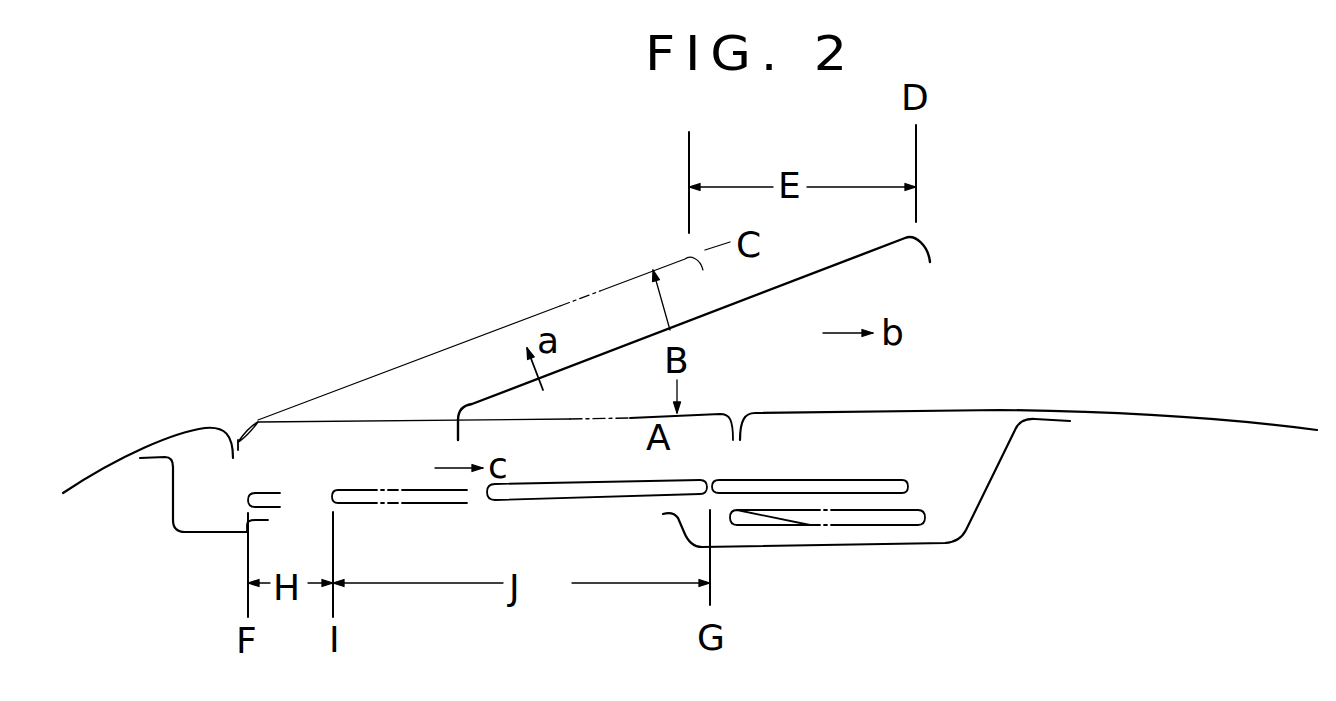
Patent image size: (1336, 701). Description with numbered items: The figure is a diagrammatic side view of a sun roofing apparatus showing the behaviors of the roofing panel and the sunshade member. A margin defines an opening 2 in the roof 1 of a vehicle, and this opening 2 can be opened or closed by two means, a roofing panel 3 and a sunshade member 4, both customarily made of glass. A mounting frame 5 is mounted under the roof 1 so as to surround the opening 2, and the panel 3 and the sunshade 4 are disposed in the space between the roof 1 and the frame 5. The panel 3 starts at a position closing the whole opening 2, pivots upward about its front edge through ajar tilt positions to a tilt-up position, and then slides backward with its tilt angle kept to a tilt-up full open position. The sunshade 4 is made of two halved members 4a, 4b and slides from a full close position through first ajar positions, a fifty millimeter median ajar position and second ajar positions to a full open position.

The roof 1 is at (1032, 410).
The opening 2 is at (258, 420).
The roofing panel 3 is at (770, 292).
The sunshade member 4 is at (643, 497).
The halved member 4a is at (550, 490).
The halved member 4b is at (867, 483).
The mounting frame 5 is at (878, 545).